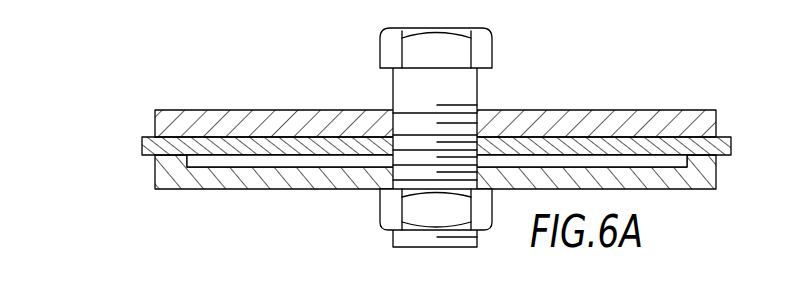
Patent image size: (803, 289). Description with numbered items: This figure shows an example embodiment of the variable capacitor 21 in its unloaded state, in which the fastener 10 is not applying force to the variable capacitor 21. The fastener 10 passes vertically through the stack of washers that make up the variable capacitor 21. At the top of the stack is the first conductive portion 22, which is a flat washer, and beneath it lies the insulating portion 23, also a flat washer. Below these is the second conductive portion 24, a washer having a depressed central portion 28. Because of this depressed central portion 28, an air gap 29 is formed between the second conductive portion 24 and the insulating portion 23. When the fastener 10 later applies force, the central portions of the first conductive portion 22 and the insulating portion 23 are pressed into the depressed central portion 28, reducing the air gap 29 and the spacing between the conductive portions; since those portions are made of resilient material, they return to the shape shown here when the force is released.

The fastener 10 is at (501, 36).
The variable capacitor 21 is at (152, 110).
The first conductive portion 22 is at (161, 110).
The insulating portion 23 is at (142, 148).
The second conductive portion 24 is at (177, 189).
The depressed central portion 28 is at (292, 167).
The air gap 29 is at (558, 156).